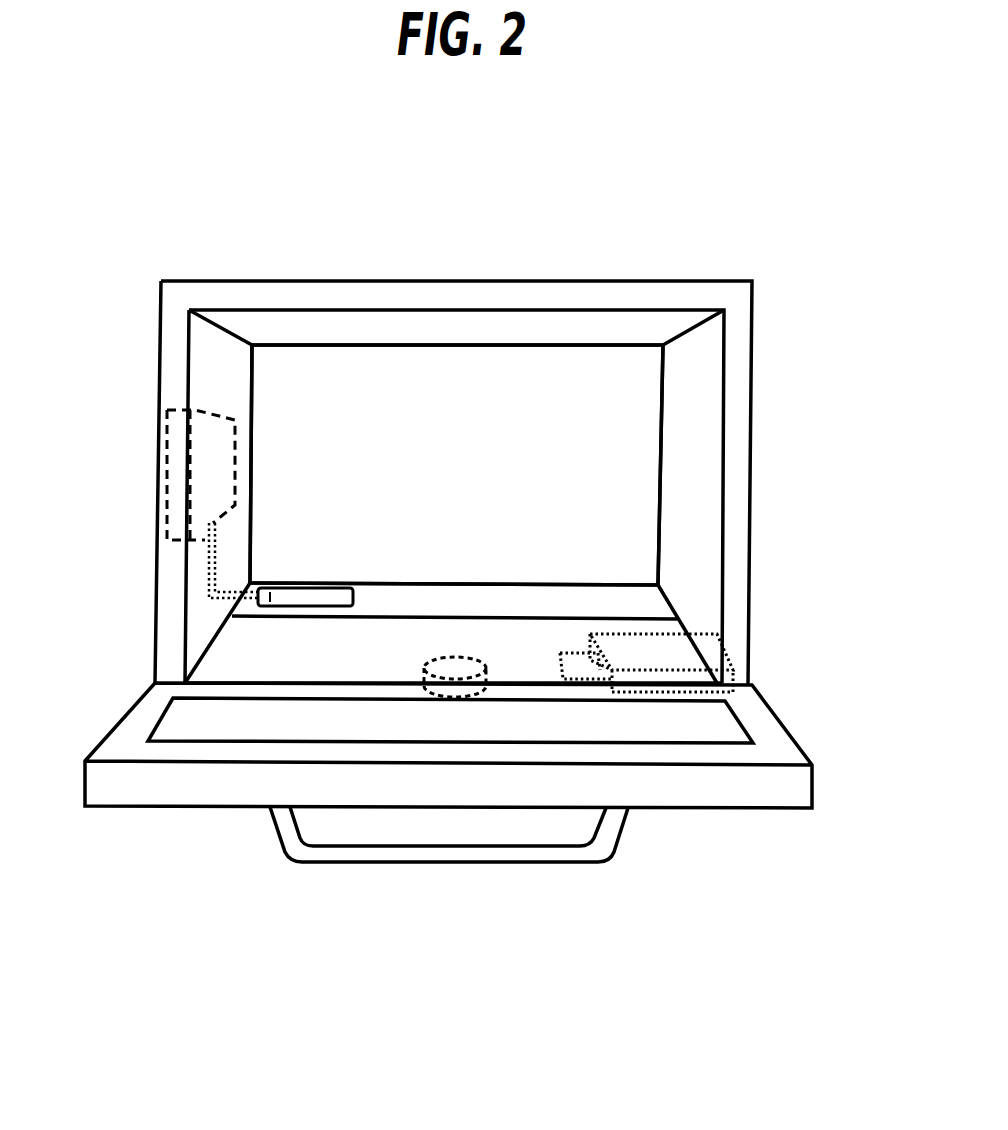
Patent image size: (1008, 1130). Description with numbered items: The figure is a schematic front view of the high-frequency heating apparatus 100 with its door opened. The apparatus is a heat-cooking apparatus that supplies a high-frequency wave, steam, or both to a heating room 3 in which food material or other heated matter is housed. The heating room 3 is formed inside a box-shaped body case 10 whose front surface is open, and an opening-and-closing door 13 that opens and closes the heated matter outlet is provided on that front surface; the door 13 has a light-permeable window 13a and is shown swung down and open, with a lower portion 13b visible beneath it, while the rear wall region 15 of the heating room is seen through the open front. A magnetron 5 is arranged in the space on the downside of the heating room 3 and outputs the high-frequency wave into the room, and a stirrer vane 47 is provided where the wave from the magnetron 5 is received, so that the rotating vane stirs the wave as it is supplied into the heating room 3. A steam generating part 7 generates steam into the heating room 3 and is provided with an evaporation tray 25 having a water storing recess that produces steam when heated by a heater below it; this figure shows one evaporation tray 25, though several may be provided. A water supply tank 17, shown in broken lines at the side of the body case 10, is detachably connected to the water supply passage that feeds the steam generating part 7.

The high-frequency heating apparatus 100 is at (392, 283).
The body case 10 is at (251, 282).
The heating room 3 is at (694, 430).
The rear wall 15 is at (487, 365).
The water supply tank 17 is at (165, 476).
The steam generating part 7 is at (285, 570).
The evaporation tray 25 is at (337, 597).
The stirrer vane 47 is at (428, 664).
The magnetron 5 is at (725, 640).
The opening-and-closing door 13 is at (170, 789).
The light-permeable window 13a is at (720, 730).
The handle 13b is at (565, 862).